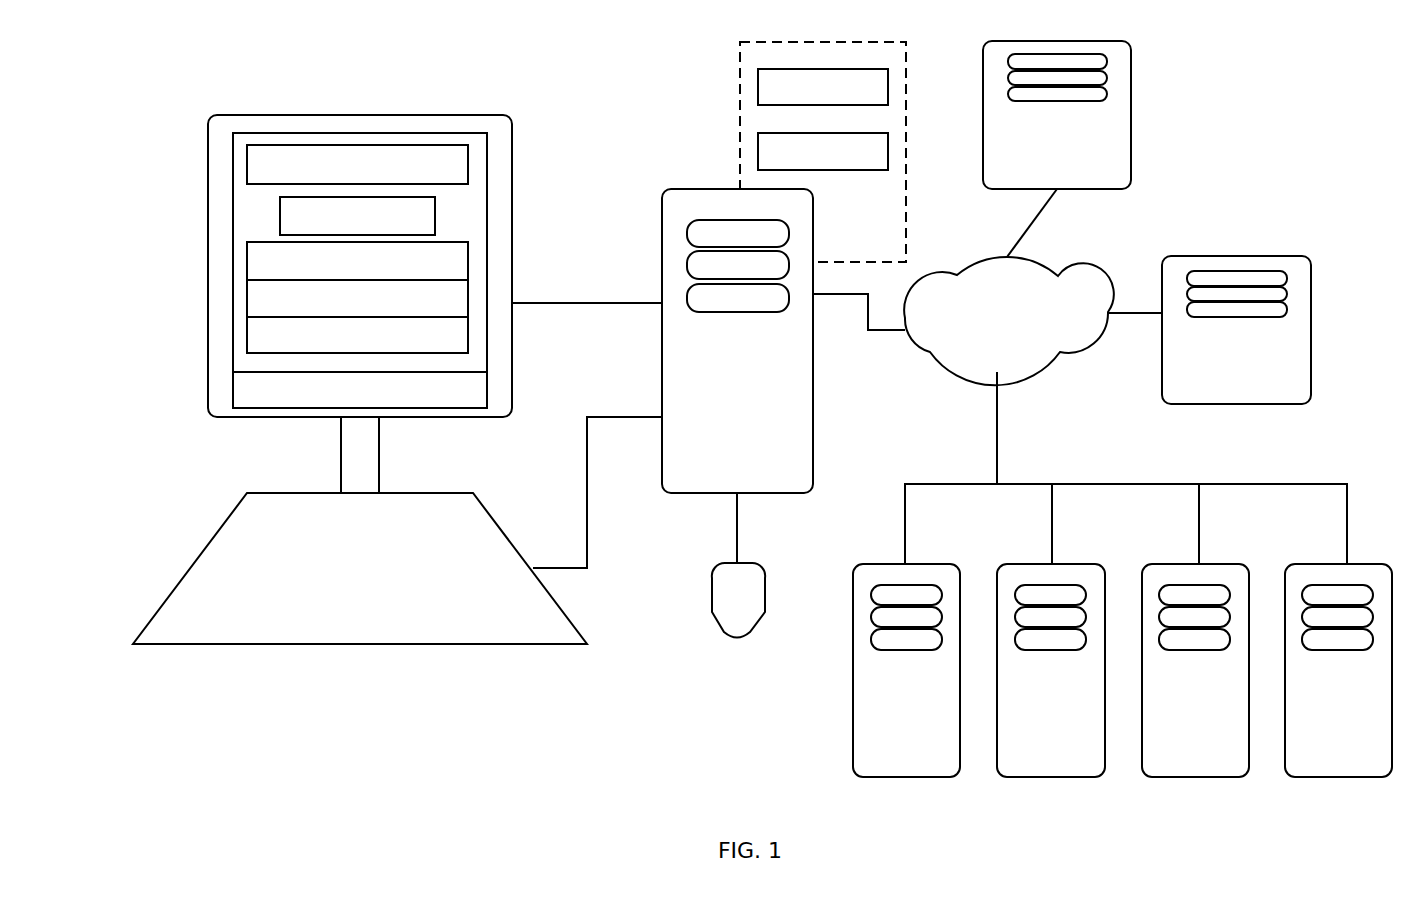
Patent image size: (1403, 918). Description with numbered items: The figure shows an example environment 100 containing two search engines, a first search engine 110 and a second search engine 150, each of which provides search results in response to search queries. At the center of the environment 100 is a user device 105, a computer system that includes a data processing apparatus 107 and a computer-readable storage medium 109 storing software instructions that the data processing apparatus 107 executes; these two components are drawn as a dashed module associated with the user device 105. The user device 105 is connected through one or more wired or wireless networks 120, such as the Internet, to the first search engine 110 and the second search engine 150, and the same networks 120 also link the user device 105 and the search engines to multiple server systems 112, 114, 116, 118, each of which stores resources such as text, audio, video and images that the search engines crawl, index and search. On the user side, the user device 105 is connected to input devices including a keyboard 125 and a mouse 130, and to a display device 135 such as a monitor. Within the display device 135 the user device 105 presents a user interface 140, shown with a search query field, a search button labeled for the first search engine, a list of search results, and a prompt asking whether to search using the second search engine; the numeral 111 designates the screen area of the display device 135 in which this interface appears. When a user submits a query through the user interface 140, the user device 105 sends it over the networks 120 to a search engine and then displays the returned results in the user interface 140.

The environment 100 is at (316, 86).
The user device 105 is at (717, 383).
The data processing apparatus 107 is at (805, 97).
The computer-readable storage medium 109 is at (805, 162).
The first search engine 110 is at (1217, 378).
The display screen 111 is at (233, 188).
The server system 112 is at (891, 714).
The server system 114 is at (1034, 714).
The server system 116 is at (1177, 714).
The server system 118 is at (1320, 714).
The networks 120 is at (985, 333).
The keyboard 125 is at (353, 644).
The mouse 130 is at (722, 628).
The display device 135 is at (512, 152).
The user interface 140 is at (487, 206).
The second search engine 150 is at (1039, 161).